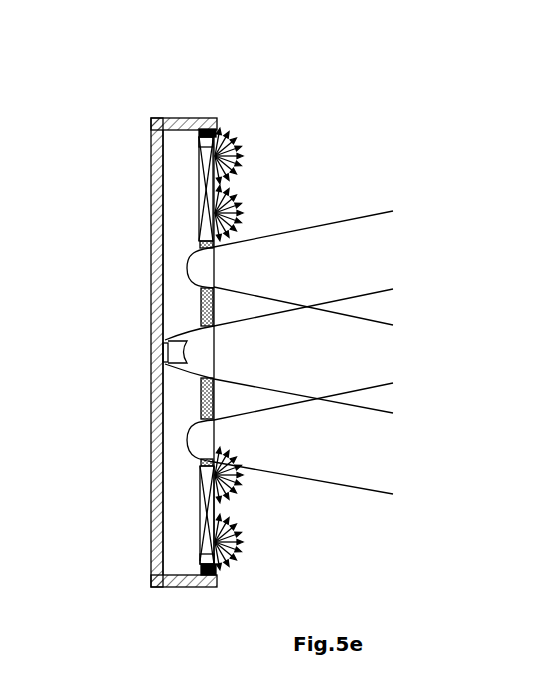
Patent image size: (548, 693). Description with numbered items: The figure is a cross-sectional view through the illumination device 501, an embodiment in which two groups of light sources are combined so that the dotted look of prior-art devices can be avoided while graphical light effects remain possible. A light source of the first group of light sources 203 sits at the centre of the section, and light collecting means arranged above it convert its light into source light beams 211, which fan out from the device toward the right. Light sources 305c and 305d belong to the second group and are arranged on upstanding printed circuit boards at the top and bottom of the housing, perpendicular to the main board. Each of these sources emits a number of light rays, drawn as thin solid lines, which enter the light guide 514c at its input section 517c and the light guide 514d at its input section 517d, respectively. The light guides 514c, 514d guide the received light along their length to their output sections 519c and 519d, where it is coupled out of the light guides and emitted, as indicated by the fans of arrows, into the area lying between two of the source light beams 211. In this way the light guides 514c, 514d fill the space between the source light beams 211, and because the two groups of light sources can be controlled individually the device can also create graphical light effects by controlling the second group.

The illumination device 501 is at (221, 58).
The second group light source 305c is at (217, 128).
The second group light source 305d is at (217, 574).
The input section 517c is at (202, 131).
The input section 517d is at (207, 549).
The light guide 514c is at (200, 218).
The light guide 514d is at (203, 522).
The output section 519c is at (255, 128).
The output section 519d is at (257, 463).
The source light beam 211 is at (279, 352).
The first group of light sources 203 is at (163, 346).